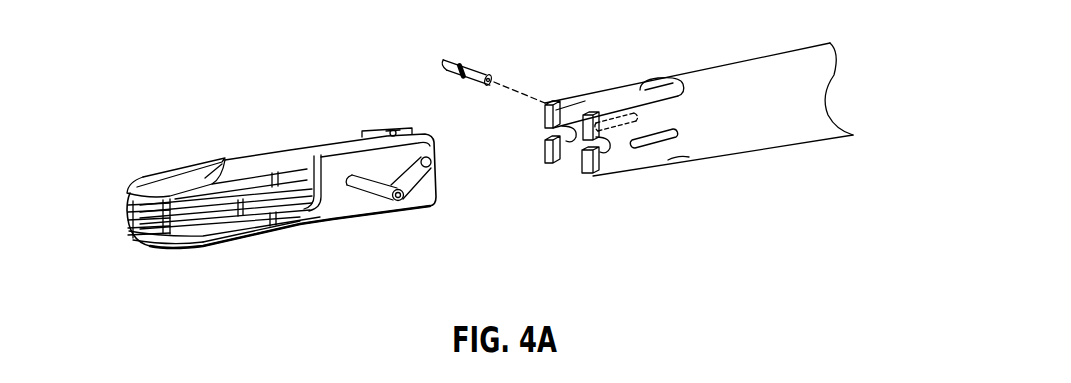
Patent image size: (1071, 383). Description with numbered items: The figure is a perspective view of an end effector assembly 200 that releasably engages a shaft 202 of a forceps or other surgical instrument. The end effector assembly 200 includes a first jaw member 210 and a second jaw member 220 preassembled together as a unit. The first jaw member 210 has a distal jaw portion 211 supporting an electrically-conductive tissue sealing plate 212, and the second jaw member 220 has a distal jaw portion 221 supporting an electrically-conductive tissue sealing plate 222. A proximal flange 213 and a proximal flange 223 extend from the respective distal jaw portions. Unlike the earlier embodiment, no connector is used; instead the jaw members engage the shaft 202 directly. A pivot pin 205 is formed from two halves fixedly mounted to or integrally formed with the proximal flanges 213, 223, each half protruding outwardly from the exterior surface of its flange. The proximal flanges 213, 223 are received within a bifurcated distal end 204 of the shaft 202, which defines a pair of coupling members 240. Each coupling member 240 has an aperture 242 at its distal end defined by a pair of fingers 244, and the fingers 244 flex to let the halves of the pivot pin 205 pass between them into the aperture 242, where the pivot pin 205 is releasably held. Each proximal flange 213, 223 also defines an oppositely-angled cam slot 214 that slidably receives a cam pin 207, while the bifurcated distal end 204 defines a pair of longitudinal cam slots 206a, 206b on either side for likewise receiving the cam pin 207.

The end effector assembly 200 is at (258, 104).
The shaft 202 is at (688, 42).
The bifurcated distal end 204 is at (660, 165).
The pivot pin 205 is at (408, 198).
The longitudinal cam slot 206a is at (621, 118).
The longitudinal cam slot 206b is at (682, 140).
The cam pin 207 is at (445, 58).
The first jaw member 210 is at (143, 168).
The distal jaw portion 211 is at (226, 159).
The electrically-conductive tissue sealing plate 212 is at (128, 205).
The proximal flange 213 is at (376, 131).
The cam slot 214 is at (408, 182).
The second jaw member 220 is at (148, 252).
The distal jaw portion 221 is at (233, 242).
The electrically-conductive tissue sealing plate 222 is at (127, 225).
The proximal flange 223 is at (353, 222).
The coupling member 240 is at (602, 152).
The aperture 242 is at (545, 116).
The fingers 244 is at (545, 144).